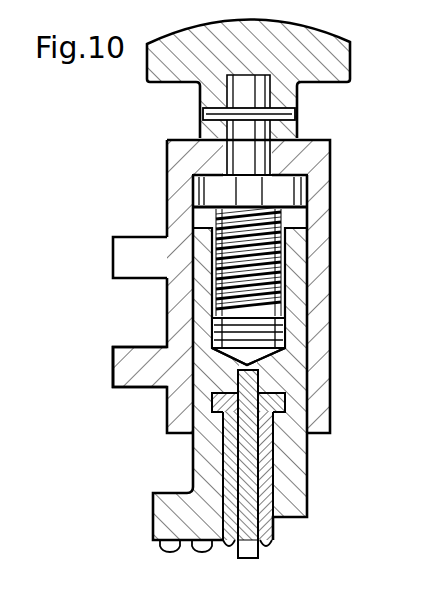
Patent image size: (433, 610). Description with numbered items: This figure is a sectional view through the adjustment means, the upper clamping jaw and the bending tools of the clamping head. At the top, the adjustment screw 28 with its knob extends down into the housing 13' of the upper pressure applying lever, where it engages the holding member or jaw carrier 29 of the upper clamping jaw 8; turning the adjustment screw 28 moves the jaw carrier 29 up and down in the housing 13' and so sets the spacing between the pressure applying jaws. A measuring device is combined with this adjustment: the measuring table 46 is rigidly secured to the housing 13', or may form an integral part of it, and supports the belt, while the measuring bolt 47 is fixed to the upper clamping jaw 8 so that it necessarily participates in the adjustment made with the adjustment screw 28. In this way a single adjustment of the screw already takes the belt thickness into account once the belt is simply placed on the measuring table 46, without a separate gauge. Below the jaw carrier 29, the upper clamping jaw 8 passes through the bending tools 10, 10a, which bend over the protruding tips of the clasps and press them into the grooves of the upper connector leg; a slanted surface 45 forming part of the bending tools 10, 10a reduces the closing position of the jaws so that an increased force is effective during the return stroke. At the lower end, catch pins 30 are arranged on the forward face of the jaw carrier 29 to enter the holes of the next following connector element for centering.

The adjustment screw 28 is at (257, 135).
The housing 13' is at (249, 286).
The measuring bolt 47 is at (133, 250).
The measuring table 46 is at (122, 358).
The jaw carrier 29 is at (293, 336).
The upper clamping jaw 8 is at (250, 385).
The slanted surface 45 is at (212, 402).
The bending tool 10a is at (228, 457).
The bending tool 10 is at (267, 467).
The catch pins 30 is at (162, 541).